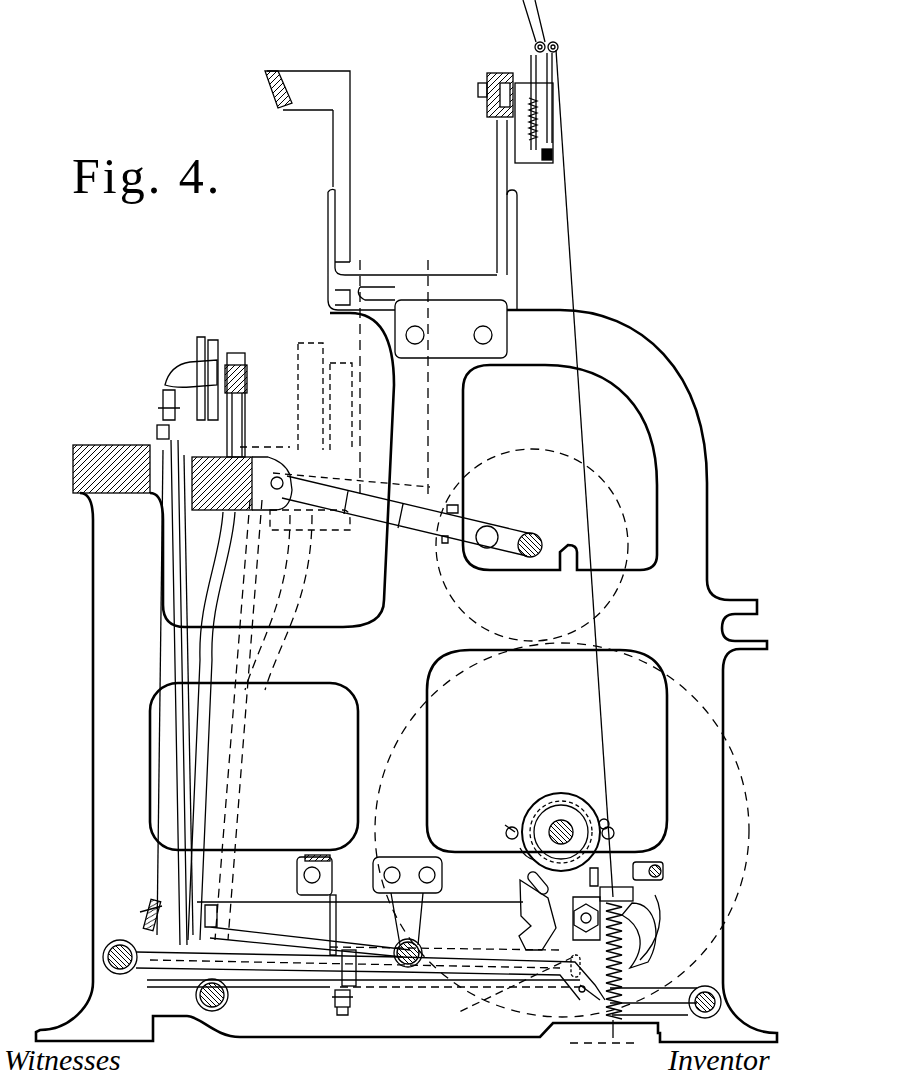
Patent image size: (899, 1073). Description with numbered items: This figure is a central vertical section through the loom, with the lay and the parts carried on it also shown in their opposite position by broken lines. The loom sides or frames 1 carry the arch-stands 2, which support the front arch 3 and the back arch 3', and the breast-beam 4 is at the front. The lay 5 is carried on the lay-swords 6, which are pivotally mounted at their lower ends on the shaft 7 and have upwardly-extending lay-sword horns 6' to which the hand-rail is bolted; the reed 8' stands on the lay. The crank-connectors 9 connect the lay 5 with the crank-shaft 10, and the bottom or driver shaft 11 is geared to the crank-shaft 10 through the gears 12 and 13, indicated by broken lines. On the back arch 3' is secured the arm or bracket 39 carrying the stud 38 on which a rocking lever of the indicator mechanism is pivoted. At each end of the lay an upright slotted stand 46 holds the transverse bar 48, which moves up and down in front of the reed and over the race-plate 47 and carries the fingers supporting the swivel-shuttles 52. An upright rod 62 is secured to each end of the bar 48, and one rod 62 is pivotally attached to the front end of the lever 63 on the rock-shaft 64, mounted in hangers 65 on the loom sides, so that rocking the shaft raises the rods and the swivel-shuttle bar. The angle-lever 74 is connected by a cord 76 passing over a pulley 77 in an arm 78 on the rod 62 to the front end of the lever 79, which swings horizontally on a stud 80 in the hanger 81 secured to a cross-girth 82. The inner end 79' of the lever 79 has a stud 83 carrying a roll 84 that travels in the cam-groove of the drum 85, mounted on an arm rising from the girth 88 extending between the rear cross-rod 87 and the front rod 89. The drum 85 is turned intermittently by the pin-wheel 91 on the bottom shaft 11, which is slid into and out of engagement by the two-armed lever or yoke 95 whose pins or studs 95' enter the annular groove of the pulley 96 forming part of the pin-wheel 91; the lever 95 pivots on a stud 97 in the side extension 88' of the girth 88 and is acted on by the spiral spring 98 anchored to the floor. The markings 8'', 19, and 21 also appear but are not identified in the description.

The loom sides or frames 1 is at (712, 697).
The arch-stands 2 is at (393, 353).
The front arch 3 is at (391, 190).
The back arch 3' is at (487, 174).
The breast-beam 4 is at (73, 472).
The lay 5 is at (231, 692).
The lay-swords 6 is at (250, 720).
The lay-sword horns 6' is at (289, 399).
The shaft 7 is at (215, 1000).
The reed 8' is at (246, 378).
The lower rod 8'' is at (253, 424).
The crank-connectors 9 is at (390, 510).
The crank-shaft 10 is at (502, 540).
The bottom or driver shaft 11 is at (565, 830).
The gear 12 is at (617, 505).
The gear 13 is at (725, 764).
The bracket 19 is at (664, 868).
The base 21 is at (455, 1030).
The stud 38 is at (541, 160).
The arm or bracket 39 is at (519, 150).
The upright slotted stand 46 is at (211, 343).
The race-plate 47 is at (197, 453).
The transverse bar 48 is at (212, 363).
The swivel-shuttles 52 is at (173, 398).
The upright rod 62 is at (183, 567).
The lever 63 is at (243, 937).
The rock-shaft 64 is at (420, 950).
The hangers 65 is at (416, 912).
The angle-lever 74 is at (188, 365).
The cord 76 is at (152, 868).
The pulley 77 is at (148, 918).
The arm 78 is at (159, 905).
The lever 79 is at (363, 991).
The inner end of lever 79' is at (582, 1001).
The stud 80 is at (353, 950).
The hanger 81 is at (336, 918).
The cross-girth 82 is at (297, 893).
The stud 83 is at (596, 988).
The roll 84 is at (588, 960).
The drum 85 is at (640, 930).
The rear cross-rod 87 is at (717, 997).
The girth 88 is at (473, 999).
The side extension 88' is at (647, 893).
The front rod 89 is at (110, 955).
The pin-wheel 91 is at (517, 832).
The two-armed lever or yoke 95 is at (564, 839).
The pins or studs 95' is at (554, 815).
The pulley 96 is at (547, 908).
The stud 97 is at (567, 895).
The spiral spring 98 is at (633, 977).